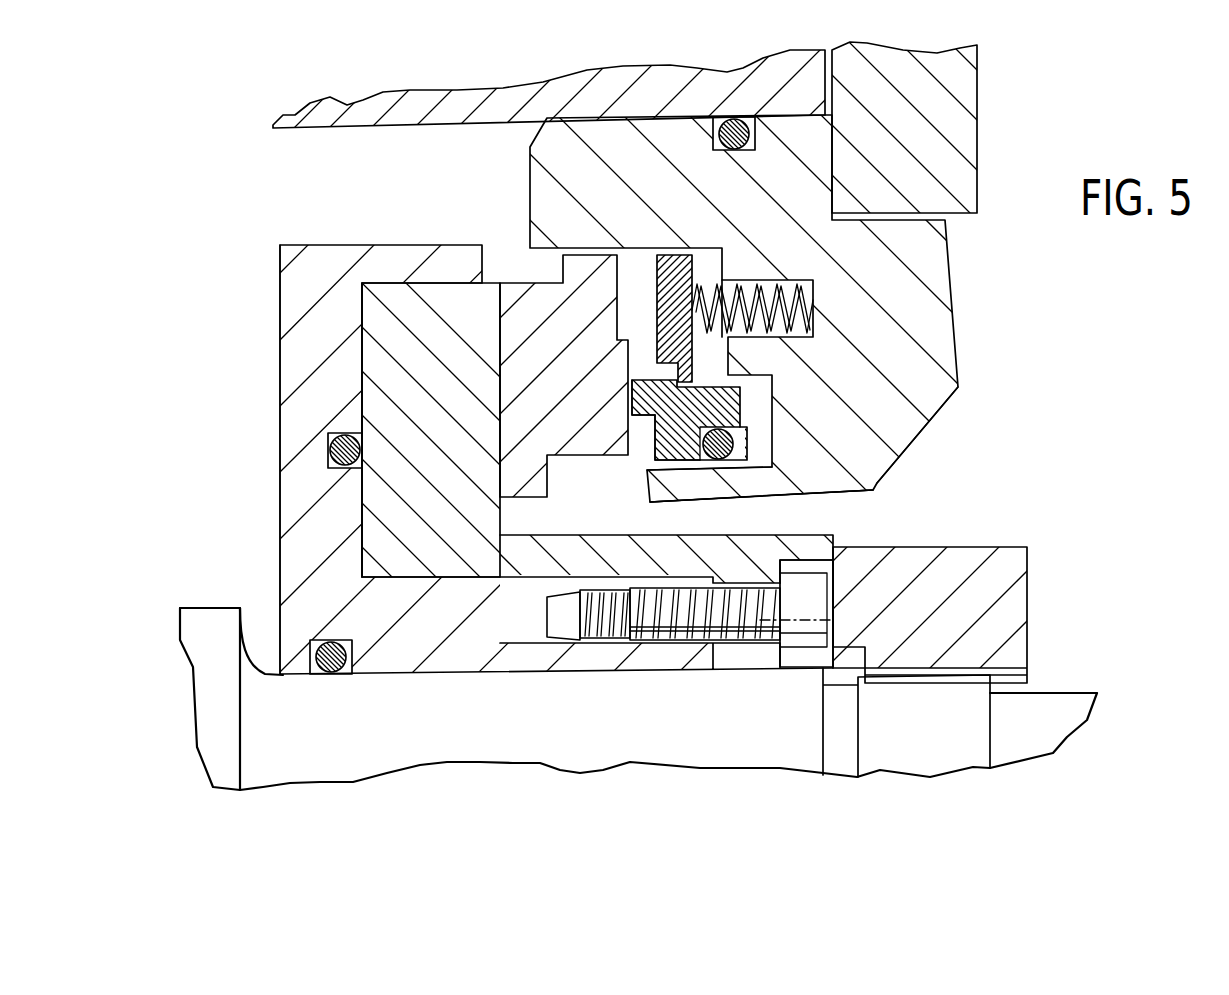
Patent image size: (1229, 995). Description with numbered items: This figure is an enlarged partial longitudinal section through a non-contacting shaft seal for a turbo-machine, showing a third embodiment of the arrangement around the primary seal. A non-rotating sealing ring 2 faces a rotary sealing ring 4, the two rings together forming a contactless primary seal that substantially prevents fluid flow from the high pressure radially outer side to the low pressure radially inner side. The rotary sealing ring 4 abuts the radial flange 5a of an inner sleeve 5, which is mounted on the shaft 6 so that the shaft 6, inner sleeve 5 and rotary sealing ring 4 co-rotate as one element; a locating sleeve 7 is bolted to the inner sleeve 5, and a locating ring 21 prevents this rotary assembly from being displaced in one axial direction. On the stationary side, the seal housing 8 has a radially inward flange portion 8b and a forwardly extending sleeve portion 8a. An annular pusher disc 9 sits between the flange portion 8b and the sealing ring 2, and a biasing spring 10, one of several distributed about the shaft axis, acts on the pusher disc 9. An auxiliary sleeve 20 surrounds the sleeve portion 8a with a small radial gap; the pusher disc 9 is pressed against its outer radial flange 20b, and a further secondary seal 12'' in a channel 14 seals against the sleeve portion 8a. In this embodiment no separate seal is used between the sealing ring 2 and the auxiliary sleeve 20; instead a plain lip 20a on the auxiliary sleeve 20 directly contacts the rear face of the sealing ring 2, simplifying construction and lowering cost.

The sealing ring 2 is at (522, 313).
The rotary sealing ring 4 is at (398, 303).
The inner sleeve 5 is at (385, 655).
The radial flange 5a is at (298, 348).
The shaft 6 is at (258, 652).
The locating sleeve 7 is at (826, 541).
The seal housing 8 is at (930, 253).
The sleeve portion 8a is at (685, 480).
The radially inward flange portion 8b is at (937, 377).
The pusher disc 9 is at (668, 277).
The biasing spring 10 is at (815, 298).
The secondary seal 12'' is at (797, 496).
The channel 14 is at (747, 437).
The auxiliary sleeve 20 is at (735, 412).
The plain lip 20a is at (630, 390).
The radial flange 20b is at (668, 387).
The locating ring 21 is at (1010, 612).